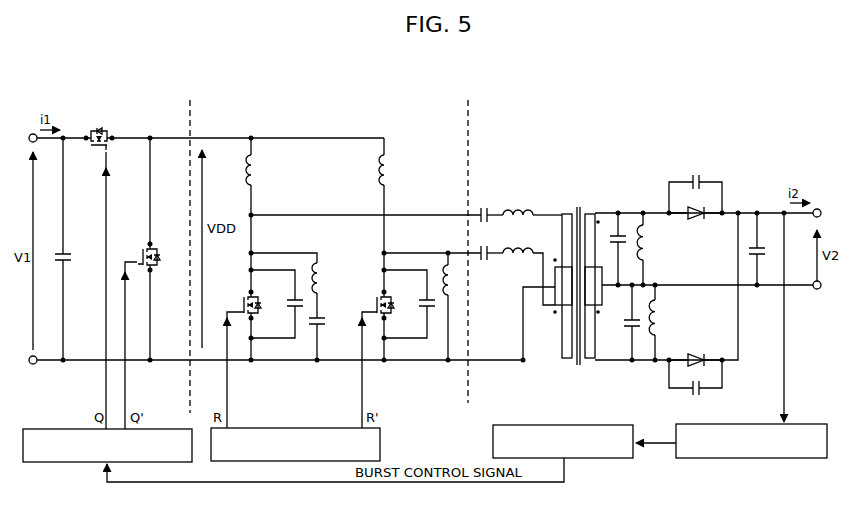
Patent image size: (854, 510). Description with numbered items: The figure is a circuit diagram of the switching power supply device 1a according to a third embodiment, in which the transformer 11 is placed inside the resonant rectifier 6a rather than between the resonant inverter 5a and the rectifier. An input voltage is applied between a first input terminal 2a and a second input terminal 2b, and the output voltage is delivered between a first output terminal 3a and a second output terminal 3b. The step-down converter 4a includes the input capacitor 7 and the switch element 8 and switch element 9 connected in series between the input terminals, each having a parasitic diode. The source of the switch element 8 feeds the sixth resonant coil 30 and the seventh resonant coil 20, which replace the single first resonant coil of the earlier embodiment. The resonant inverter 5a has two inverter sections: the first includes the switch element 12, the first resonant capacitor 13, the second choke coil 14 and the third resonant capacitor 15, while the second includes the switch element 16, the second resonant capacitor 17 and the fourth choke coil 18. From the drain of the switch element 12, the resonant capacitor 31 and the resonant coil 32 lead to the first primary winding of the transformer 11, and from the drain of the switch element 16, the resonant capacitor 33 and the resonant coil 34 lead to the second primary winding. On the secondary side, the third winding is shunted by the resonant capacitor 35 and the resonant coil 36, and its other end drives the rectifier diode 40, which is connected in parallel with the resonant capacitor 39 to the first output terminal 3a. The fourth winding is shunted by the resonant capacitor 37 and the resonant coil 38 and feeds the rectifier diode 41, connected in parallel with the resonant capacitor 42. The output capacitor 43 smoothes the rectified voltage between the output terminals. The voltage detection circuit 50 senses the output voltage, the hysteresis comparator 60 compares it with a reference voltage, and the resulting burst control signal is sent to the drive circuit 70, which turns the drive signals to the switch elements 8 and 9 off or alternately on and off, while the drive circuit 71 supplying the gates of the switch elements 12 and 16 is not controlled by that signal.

The switching power supply device 1a is at (477, 65).
The first input terminal 2a is at (33, 134).
The second input terminal 2b is at (33, 364).
The first output terminal 3a is at (819, 209).
The second output terminal 3b is at (819, 289).
The step-down converter 4a is at (128, 101).
The resonant inverter 5a is at (318, 101).
The resonant rectifier 6a is at (636, 101).
The input capacitor 7 is at (71, 258).
The switch element 8 is at (92, 152).
The switch element 9 is at (143, 250).
The transformer 11 is at (581, 207).
The switch element 12 is at (243, 297).
The first resonant capacitor 13 is at (290, 300).
The second choke coil 14 is at (320, 268).
The third resonant capacitor 15 is at (322, 318).
The switch element 16 is at (376, 297).
The second resonant capacitor 17 is at (422, 300).
The fourth choke coil 18 is at (452, 280).
The seventh resonant coil 20 is at (390, 168).
The sixth resonant coil 30 is at (257, 168).
The resonant capacitor 31 is at (484, 208).
The resonant coil 32 is at (518, 210).
The resonant capacitor 33 is at (484, 246).
The resonant coil 34 is at (518, 248).
The resonant capacitor 35 is at (627, 240).
The resonant coil 36 is at (648, 241).
The resonant capacitor 37 is at (628, 324).
The resonant coil 38 is at (660, 316).
The resonant capacitor 39 is at (695, 176).
The rectifier diode 40 is at (696, 220).
The rectifier diode 41 is at (696, 353).
The resonant capacitor 42 is at (696, 395).
The output capacitor 43 is at (765, 253).
The voltage detection circuit 50 is at (796, 424).
The hysteresis comparator 60 is at (606, 425).
The drive circuit 70 is at (176, 429).
The drive circuit 71 is at (346, 428).